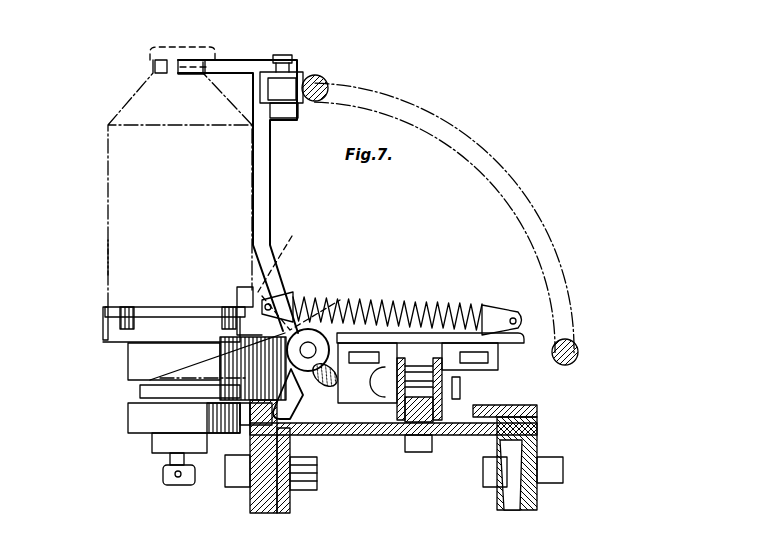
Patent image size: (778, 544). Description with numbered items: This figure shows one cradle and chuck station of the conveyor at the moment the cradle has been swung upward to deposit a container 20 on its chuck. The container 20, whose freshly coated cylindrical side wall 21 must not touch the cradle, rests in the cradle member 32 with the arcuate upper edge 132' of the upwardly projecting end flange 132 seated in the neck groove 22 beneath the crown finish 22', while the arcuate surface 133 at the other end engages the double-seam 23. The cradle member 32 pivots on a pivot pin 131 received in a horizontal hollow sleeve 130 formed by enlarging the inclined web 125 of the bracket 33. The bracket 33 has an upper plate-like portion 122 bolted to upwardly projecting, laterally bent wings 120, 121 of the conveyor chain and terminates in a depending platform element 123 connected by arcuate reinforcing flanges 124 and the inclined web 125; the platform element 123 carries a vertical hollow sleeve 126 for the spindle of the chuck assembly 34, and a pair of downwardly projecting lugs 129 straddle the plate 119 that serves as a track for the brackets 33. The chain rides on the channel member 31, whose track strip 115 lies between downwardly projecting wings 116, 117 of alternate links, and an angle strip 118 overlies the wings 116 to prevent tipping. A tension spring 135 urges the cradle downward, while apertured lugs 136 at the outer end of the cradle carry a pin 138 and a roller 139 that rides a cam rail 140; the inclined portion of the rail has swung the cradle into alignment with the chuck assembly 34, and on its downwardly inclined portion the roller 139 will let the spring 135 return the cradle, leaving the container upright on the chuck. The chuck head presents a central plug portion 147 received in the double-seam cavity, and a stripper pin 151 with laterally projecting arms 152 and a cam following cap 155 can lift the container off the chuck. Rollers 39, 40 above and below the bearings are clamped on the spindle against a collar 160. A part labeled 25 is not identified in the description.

The container 20 is at (106, 175).
The cylindrical side wall 21 is at (106, 258).
The neck 22 is at (132, 68).
The crown finish 22' is at (162, 44).
The double-seam 23 is at (102, 310).
The adjusting screw 25 is at (424, 377).
The chain supporting channel member 31 is at (347, 437).
The cradle member 32 is at (258, 60).
The bracket 33 is at (246, 305).
The chuck assembly 34 is at (101, 339).
The roller 39 is at (130, 370).
The roller 40 is at (138, 418).
The track strip 115 is at (424, 431).
The wing 116 is at (462, 422).
The wing 117 is at (389, 408).
The angle strip 118 is at (538, 427).
The plate 119 is at (250, 500).
The wing 120 is at (494, 348).
The wing 121 is at (417, 367).
The upper plate-like portion 122 is at (388, 333).
The platform element 123 is at (288, 388).
The arcuate reinforcing flange 124 is at (252, 375).
The inclined web 125 is at (364, 382).
The hollow sleeve 126 is at (150, 392).
The lug 129 is at (274, 412).
The hollow sleeve 130 is at (312, 330).
The pivot pin 131 is at (316, 335).
The end flange 132 is at (203, 42).
The arcuate upper edge 132' is at (180, 37).
The arcuate surface 133 is at (299, 277).
The tension spring 135 is at (480, 320).
The apertured lug 136 is at (297, 112).
The pin 138 is at (284, 55).
The roller 139 is at (300, 80).
The cam rail 140 is at (327, 84).
The central plug portion 147 is at (165, 307).
The pin 151 is at (170, 460).
The arm 152 is at (120, 326).
The cam following cap 155 is at (170, 485).
The collar 160 is at (152, 443).